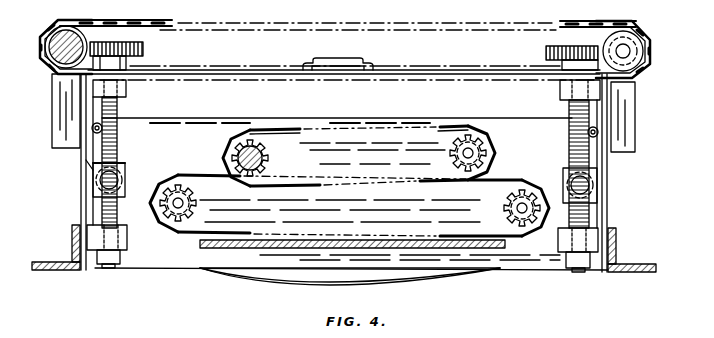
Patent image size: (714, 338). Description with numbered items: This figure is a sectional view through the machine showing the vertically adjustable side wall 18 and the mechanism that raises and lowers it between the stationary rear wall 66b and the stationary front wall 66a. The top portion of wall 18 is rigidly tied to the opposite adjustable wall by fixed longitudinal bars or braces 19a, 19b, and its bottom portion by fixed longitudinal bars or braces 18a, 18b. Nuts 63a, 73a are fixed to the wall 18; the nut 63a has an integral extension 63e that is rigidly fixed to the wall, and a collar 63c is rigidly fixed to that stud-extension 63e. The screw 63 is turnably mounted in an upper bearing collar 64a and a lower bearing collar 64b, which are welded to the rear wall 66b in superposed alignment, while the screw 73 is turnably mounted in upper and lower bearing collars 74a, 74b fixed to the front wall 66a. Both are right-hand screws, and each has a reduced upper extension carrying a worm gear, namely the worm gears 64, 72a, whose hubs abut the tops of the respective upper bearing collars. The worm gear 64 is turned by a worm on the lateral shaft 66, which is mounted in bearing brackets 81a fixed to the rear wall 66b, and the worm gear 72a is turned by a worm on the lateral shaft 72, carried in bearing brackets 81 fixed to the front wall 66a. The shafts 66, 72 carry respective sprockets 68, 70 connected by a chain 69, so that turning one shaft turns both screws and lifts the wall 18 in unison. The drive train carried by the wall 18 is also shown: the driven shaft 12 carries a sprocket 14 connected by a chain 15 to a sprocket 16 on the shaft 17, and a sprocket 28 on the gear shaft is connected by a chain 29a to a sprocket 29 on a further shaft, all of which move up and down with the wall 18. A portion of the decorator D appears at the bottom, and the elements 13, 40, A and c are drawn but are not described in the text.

The driven shaft 12 is at (262, 160).
The conveyor belt 13 is at (560, 148).
The sprocket 14 is at (268, 157).
The chain 15 is at (291, 128).
The sprocket 16 is at (450, 153).
The shaft 17 is at (473, 152).
The vertically adjustable side wall 18 is at (257, 128).
The longitudinal bar or brace 18a is at (97, 262).
The longitudinal bar or brace 18b is at (592, 259).
The longitudinal bar or brace 19a is at (92, 128).
The longitudinal bar or brace 19b is at (598, 131).
The sprocket 28 is at (505, 205).
The sprocket 29 is at (177, 184).
The chain 29a is at (192, 181).
The platform plate 40 is at (294, 249).
The screw 63 is at (118, 111).
The nut 63a is at (120, 163).
The collar 63c is at (93, 170).
The integral extension 63e is at (125, 175).
The worm gear 64 is at (140, 44).
The upper bearing collar 64a is at (126, 90).
The lower bearing collar 64b is at (127, 245).
The lateral shaft 66 is at (46, 47).
The stationary front wall 66a is at (607, 194).
The stationary rear wall 66b is at (81, 193).
The sprocket 68 is at (88, 37).
The chain 69 is at (150, 16).
The sprocket 70 is at (600, 36).
The lateral shaft 72 is at (648, 51).
The worm gear 72a is at (546, 50).
The screw 73 is at (569, 146).
The nut 73a is at (597, 173).
The upper bearing collar 74a is at (560, 97).
The lower bearing collar 74b is at (560, 252).
The bearing bracket 81 is at (635, 99).
The bearing bracket 81a is at (52, 98).
The base angle A is at (50, 262).
The handle c is at (417, 71).
The decorator D is at (310, 291).